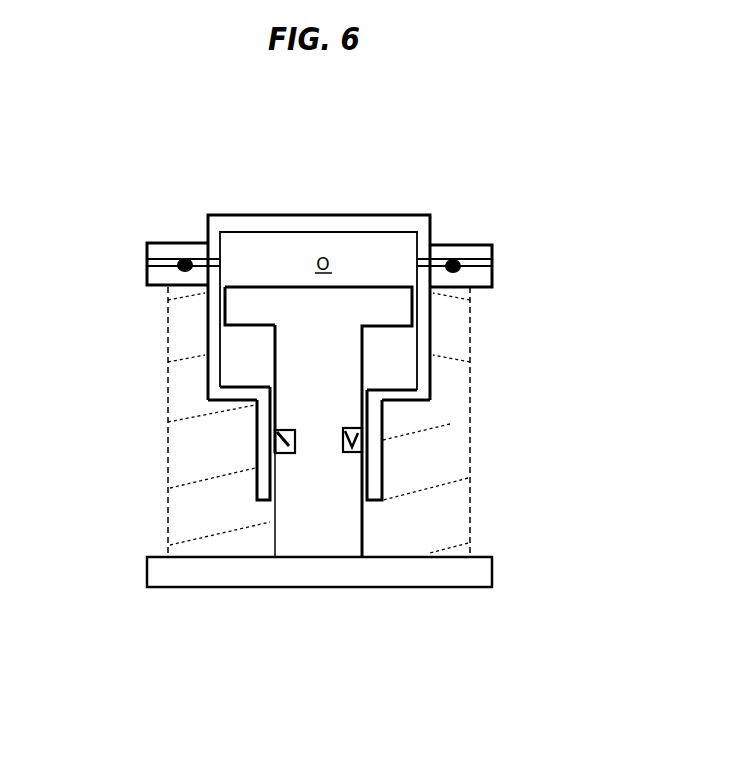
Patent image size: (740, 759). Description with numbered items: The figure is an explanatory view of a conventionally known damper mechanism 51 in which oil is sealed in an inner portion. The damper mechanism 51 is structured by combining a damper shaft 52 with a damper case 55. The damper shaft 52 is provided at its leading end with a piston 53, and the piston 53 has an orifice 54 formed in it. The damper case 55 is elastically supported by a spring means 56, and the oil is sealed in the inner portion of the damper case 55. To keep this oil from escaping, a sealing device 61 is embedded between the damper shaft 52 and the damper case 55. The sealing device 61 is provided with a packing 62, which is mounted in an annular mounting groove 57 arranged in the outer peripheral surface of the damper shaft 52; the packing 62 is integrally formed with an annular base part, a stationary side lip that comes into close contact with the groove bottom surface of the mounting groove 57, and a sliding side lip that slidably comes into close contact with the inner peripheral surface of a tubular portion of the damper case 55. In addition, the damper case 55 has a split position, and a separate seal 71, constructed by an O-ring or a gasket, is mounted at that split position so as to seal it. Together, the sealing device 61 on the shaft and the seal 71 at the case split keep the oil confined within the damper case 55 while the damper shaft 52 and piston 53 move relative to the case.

The damper mechanism 51 is at (490, 235).
The damper shaft 52 is at (326, 528).
The piston 53 is at (372, 318).
The orifice 54 is at (238, 318).
The damper case 55 is at (215, 332).
The spring means 56 is at (172, 388).
The annular mounting groove 57 is at (272, 444).
The sealing device 61 is at (382, 428).
The packing 62 is at (367, 448).
The seal 71 is at (182, 260).